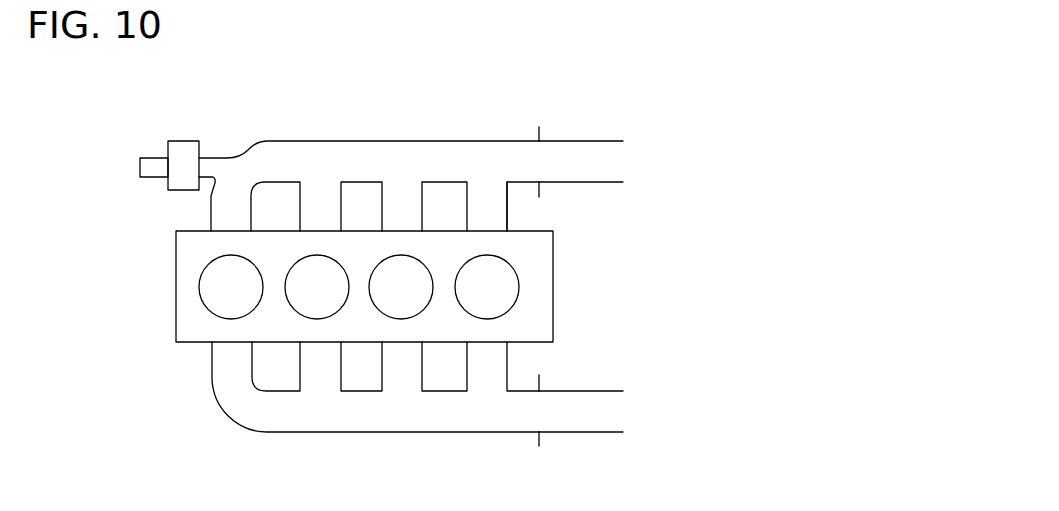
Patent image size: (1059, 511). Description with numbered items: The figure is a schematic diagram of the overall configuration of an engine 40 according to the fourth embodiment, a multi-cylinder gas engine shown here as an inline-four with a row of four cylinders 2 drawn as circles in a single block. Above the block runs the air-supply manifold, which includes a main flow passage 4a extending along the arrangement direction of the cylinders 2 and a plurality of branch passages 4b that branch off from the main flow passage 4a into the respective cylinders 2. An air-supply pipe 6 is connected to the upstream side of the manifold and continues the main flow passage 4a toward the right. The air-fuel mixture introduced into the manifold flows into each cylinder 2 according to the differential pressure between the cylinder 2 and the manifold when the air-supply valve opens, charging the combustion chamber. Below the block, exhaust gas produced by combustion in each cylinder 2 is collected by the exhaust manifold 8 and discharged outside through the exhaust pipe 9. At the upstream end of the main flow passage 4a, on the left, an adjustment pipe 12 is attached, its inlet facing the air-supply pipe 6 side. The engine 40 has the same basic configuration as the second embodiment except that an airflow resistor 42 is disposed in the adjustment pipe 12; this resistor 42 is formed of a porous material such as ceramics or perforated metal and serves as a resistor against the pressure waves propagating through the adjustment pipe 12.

The engine 40 is at (657, 87).
The cylinder 2 is at (198, 284).
The main flow passage 4a is at (358, 141).
The branch passage 4b is at (508, 208).
The air-supply pipe 6 is at (587, 141).
The airflow resistor 42 is at (200, 148).
The adjustment pipe 12 is at (155, 158).
The exhaust manifold 8 is at (352, 433).
The exhaust pipe 9 is at (590, 433).